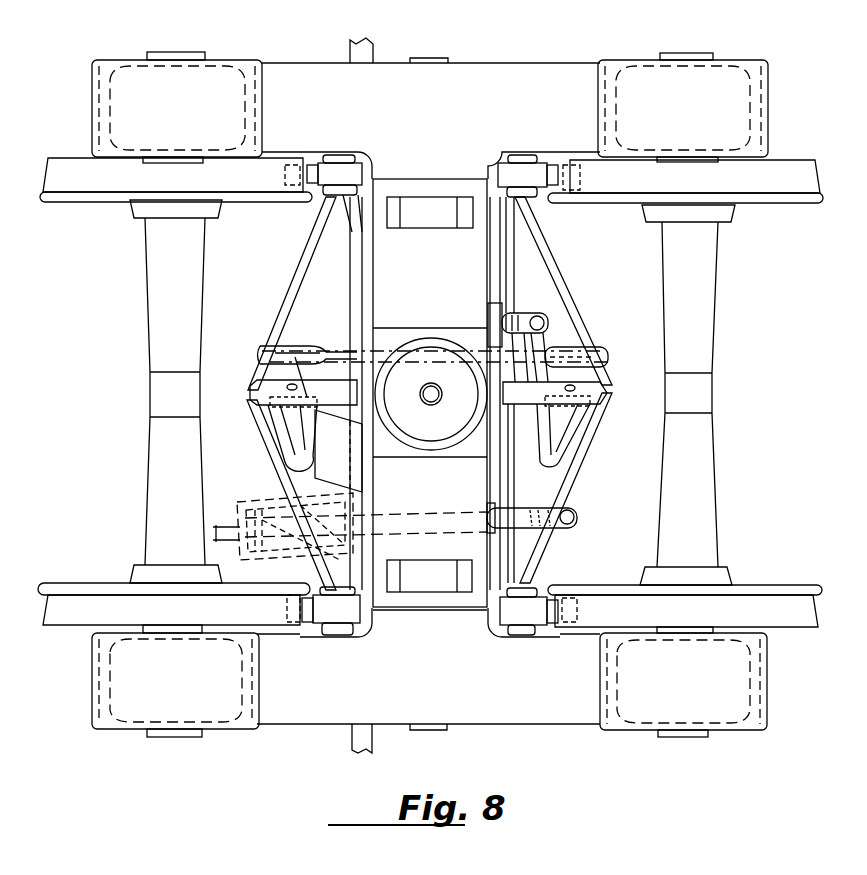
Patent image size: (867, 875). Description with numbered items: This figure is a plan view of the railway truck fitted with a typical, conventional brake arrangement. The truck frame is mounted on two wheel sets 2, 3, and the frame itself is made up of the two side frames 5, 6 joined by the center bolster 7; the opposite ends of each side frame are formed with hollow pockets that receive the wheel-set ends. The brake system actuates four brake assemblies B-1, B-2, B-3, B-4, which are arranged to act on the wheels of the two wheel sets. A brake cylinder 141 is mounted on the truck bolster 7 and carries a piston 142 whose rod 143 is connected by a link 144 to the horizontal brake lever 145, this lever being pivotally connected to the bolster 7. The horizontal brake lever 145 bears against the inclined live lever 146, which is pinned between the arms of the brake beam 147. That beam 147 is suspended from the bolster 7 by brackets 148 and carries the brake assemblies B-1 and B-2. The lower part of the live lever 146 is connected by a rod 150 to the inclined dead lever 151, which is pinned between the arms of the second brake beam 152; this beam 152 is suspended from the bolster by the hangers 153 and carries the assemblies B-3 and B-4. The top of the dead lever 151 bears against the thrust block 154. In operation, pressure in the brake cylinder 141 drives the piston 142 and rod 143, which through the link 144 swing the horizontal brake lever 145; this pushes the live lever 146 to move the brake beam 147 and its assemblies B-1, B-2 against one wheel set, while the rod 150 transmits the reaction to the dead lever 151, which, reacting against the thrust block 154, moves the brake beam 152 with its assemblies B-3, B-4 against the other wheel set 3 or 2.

The wheel set 2 is at (715, 310).
The wheel set 3 is at (147, 315).
The side frame 5 is at (497, 75).
The side frame 6 is at (538, 725).
The center bolster 7 is at (393, 280).
The brake cylinder 141 is at (268, 503).
The piston 142 is at (240, 522).
The rod 143 is at (488, 510).
The link 144 is at (553, 527).
The horizontal brake lever 145 is at (530, 445).
The live lever 146 is at (560, 420).
The brake beam 147 is at (567, 292).
The bracket 148 is at (520, 205).
The rod 150 is at (337, 348).
The dead lever 151 is at (290, 420).
The brake beam 152 is at (292, 300).
The hanger 153 is at (333, 198).
The thrust block 154 is at (340, 460).
The brake assembly B-1 is at (522, 173).
The brake assembly B-2 is at (520, 612).
The brake assembly B-3 is at (338, 172).
The brake assembly B-4 is at (335, 610).